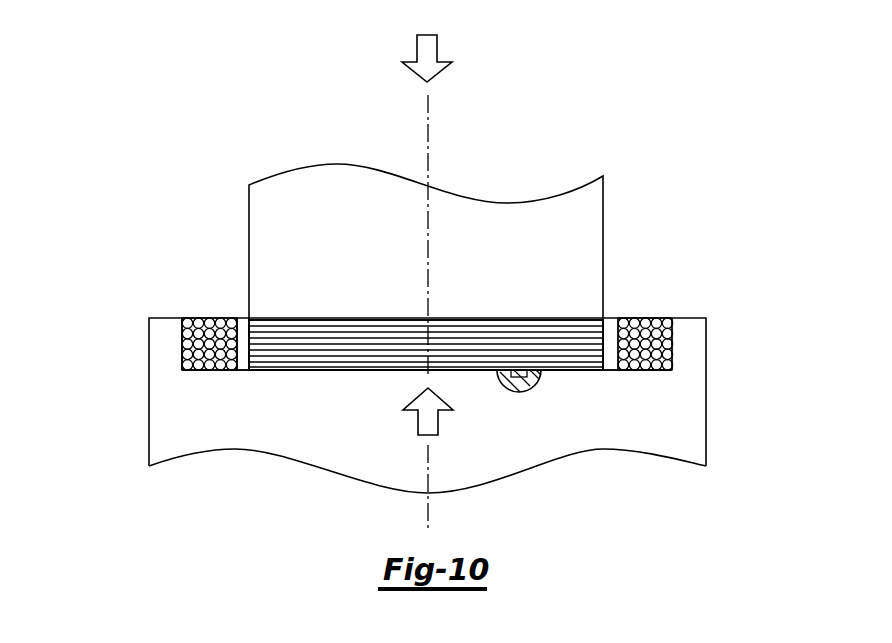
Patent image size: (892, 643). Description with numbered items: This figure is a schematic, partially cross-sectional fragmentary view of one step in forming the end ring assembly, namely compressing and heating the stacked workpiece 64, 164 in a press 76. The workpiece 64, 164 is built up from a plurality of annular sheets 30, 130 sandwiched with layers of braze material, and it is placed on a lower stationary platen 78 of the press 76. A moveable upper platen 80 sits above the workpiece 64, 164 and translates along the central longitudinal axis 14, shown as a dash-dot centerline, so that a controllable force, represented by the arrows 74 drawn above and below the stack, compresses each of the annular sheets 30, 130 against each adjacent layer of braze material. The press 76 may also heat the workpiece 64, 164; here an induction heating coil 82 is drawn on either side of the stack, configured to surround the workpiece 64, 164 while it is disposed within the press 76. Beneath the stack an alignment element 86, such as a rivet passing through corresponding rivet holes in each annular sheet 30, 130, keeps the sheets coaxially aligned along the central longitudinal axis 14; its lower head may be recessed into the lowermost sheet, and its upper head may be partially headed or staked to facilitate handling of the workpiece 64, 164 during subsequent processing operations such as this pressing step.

The central longitudinal axis 14 is at (428, 137).
The arrows 74 is at (437, 42).
The moveable upper platen 80 is at (603, 257).
The press 76 is at (136, 393).
The lower stationary platen 78 is at (706, 394).
The workpiece 64 is at (245, 312).
The workpiece 164 is at (245, 312).
The induction heating coil 82 is at (672, 343).
The annular sheets 30 is at (607, 343).
The annular sheets 130 is at (636, 399).
The alignment element 86 is at (519, 383).